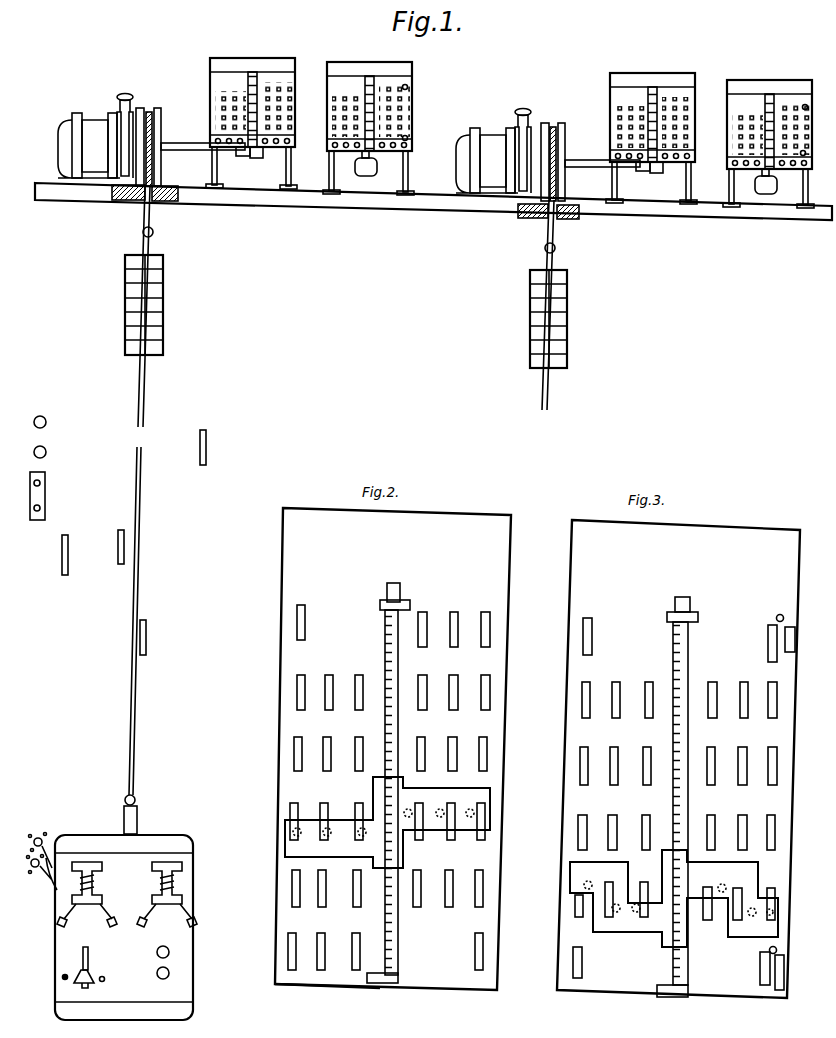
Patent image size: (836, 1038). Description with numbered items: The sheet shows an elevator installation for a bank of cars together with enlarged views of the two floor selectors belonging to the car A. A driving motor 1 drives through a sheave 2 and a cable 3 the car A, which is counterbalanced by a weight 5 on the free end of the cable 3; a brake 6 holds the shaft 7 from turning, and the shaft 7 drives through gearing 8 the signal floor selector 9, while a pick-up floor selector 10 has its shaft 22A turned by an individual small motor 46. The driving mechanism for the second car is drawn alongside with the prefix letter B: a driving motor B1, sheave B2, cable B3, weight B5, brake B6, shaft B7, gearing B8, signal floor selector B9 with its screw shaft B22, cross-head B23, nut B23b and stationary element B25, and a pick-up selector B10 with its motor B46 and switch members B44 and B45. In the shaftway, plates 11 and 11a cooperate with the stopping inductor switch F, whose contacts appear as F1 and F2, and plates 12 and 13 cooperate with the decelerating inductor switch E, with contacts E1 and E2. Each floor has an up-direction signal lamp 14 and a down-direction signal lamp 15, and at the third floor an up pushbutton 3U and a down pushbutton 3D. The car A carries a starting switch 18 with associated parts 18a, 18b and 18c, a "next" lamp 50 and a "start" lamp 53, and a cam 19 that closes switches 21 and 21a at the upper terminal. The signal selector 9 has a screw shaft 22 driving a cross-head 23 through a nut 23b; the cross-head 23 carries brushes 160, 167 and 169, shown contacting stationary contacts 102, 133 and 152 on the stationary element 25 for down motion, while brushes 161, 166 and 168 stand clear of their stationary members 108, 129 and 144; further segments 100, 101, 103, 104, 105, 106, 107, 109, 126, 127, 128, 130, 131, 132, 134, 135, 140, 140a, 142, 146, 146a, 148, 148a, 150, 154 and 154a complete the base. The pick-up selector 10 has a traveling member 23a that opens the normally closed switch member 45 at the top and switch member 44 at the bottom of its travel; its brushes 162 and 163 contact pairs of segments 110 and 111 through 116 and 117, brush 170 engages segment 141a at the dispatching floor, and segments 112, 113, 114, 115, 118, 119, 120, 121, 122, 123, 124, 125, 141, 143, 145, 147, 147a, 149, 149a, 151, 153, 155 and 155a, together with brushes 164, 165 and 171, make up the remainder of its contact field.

In FIG. 1, the driving motor 1 is at (97, 121).
In FIG. 1, the sheave 2 is at (162, 125).
In FIG. 1, the cable 3 is at (136, 380).
In FIG. 1, the weight 5 is at (165, 290).
In FIG. 1, the brake 6 is at (134, 100).
In FIG. 1, the shaft 7 is at (184, 152).
In FIG. 1, the gearing 8 is at (238, 152).
In FIG. 1, the signal floor selector 9 is at (268, 62).
In FIG. 2, the signal floor selector 9 is at (383, 1008).
In FIG. 1, the pick-up floor selector 10 is at (385, 67).
In FIG. 3, the pick-up floor selector 10 is at (605, 1015).
In FIG. 1, the plate 11 is at (121, 530).
In FIG. 1, the plate 11a is at (71, 547).
In FIG. 1, the plate 12 is at (147, 640).
In FIG. 1, the plate 13 is at (200, 439).
In FIG. 1, the up-direction signal lamp 14 is at (46, 420).
In FIG. 1, the down-direction signal lamp 15 is at (46, 452).
In FIG. 1, the up pushbutton 3U is at (45, 483).
In FIG. 1, the down pushbutton 3D is at (45, 508).
In FIG. 1, the starting switch 18 is at (114, 952).
In FIG. 1, the button contact 18a is at (62, 977).
In FIG. 1, the button base 18b is at (80, 987).
In FIG. 1, the button contact 18c is at (103, 982).
In FIG. 1, the cam 19 is at (52, 895).
In FIG. 1, the switch 21 is at (31, 863).
In FIG. 1, the switch 21a is at (37, 837).
In FIG. 1, the screw shaft 22 is at (249, 84).
In FIG. 2, the screw shaft 22 is at (385, 633).
In FIG. 3, the shaft 22A is at (673, 643).
In FIG. 1, the cross-head member 23 is at (294, 141).
In FIG. 2, the cross-head member 23 is at (491, 810).
In FIG. 1, the traveling member 23a is at (357, 152).
In FIG. 3, the traveling member 23a is at (570, 866).
In FIG. 1, the nut 23b is at (251, 158).
In FIG. 1, the stationary element 25 is at (294, 121).
In FIG. 2, the stationary element 25 is at (305, 978).
In FIG. 1, the switch member 44 is at (409, 139).
In FIG. 3, the switch member 44 is at (779, 992).
In FIG. 1, the switch member 45 is at (408, 88).
In FIG. 3, the switch member 45 is at (790, 627).
In FIG. 1, the motor 46 is at (378, 165).
In FIG. 1, the car A is at (55, 947).
In FIG. 1, the decelerating inductor switch E is at (156, 878).
In FIG. 1, the up switch contact E1 is at (144, 922).
In FIG. 1, the up switch contact E2 is at (180, 922).
In FIG. 1, the stopping inductor switch F is at (96, 884).
In FIG. 1, the down switch contact F1 is at (68, 921).
In FIG. 1, the down switch contact F2 is at (105, 921).
In FIG. 1, the "next" signal lamp 50 is at (157, 952).
In FIG. 1, the "start" signal lamp 53 is at (157, 973).
In FIG. 1, the driving motor B1 is at (492, 128).
In FIG. 1, the sheave B2 is at (565, 128).
In FIG. 1, the cable B3 is at (545, 384).
In FIG. 1, the weight B5 is at (567, 300).
In FIG. 1, the brake B6 is at (530, 112).
In FIG. 1, the shaft B7 is at (600, 168).
In FIG. 1, the gearing B8 is at (640, 170).
In FIG. 1, the signal floor selector B9 is at (662, 80).
In FIG. 1, the pick-up floor selector B10 is at (748, 85).
In FIG. 1, the screw shaft B22 is at (648, 97).
In FIG. 1, the cross-head member B23 is at (690, 152).
In FIG. 1, the nut B23b is at (655, 174).
In FIG. 1, the stationary element B25 is at (690, 120).
In FIG. 1, the switch member B44 is at (803, 165).
In FIG. 1, the switch member B45 is at (808, 106).
In FIG. 1, the motor B46 is at (760, 190).
In FIG. 2, the down cancel contact 100 is at (367, 669).
In FIG. 2, the down cancel contact 101 is at (367, 731).
In FIG. 2, the stationary contact 102 is at (363, 812).
In FIG. 2, the down cancel contact 103 is at (363, 895).
In FIG. 2, the down cancel contact 104 is at (361, 944).
In FIG. 2, the up cancel contact 105 is at (428, 621).
In FIG. 2, the up cancel contact 106 is at (426, 683).
In FIG. 2, the up cancel contact 107 is at (423, 745).
In FIG. 2, the stationary member 108 is at (423, 812).
In FIG. 2, the up cancel contact 109 is at (421, 881).
In FIG. 2, the up stop contact 126 is at (460, 621).
In FIG. 2, the up stop contact 127 is at (458, 683).
In FIG. 2, the up stop contact 128 is at (456, 745).
In FIG. 2, the stationary member 129 is at (456, 812).
In FIG. 2, the up stop contact 130 is at (453, 881).
In FIG. 2, the down stop contact 131 is at (337, 669).
In FIG. 2, the down stop contact 132 is at (335, 731).
In FIG. 2, the stationary contact 133 is at (331, 812).
In FIG. 2, the down stop contact 134 is at (330, 895).
In FIG. 2, the down stop contact 135 is at (328, 944).
In FIG. 2, the up BP contact 140 is at (490, 683).
In FIG. 2, the contact segment 140a is at (493, 621).
In FIG. 2, the up BP contact 142 is at (488, 745).
In FIG. 2, the stationary member 144 is at (488, 812).
In FIG. 2, the up BP contact 146 is at (486, 880).
In FIG. 2, the up BP contact 146a is at (477, 929).
In FIG. 2, the down BP contact 148 is at (309, 669).
In FIG. 2, the down BP contact 148a is at (310, 599).
In FIG. 2, the down BP contact 150 is at (306, 731).
In FIG. 2, the stationary contact 152 is at (296, 812).
In FIG. 2, the down BP contact 154 is at (294, 905).
In FIG. 2, the down BP contact 154a is at (293, 944).
In FIG. 2, the moving contact brush 160 is at (366, 841).
In FIG. 2, the moving contact member 161 is at (419, 833).
In FIG. 2, the moving contact member 166 is at (451, 833).
In FIG. 2, the moving contact brush 167 is at (333, 841).
In FIG. 2, the moving contact member 168 is at (482, 833).
In FIG. 2, the moving contact brush 169 is at (300, 841).
In FIG. 3, the segment 110 is at (619, 691).
In FIG. 3, the segment 111 is at (653, 691).
In FIG. 3, the down call contact 112 is at (619, 757).
In FIG. 3, the down call contact 113 is at (653, 757).
In FIG. 3, the down call contact 114 is at (618, 823).
In FIG. 3, the down call contact 115 is at (651, 823).
In FIG. 3, the segment 116 is at (616, 889).
In FIG. 3, the segment 117 is at (650, 889).
In FIG. 3, the up call contact 118 is at (716, 691).
In FIG. 3, the up call contact 119 is at (748, 691).
In FIG. 3, the up call contact 120 is at (714, 757).
In FIG. 3, the up call contact 121 is at (747, 757).
In FIG. 3, the up call contact 122 is at (713, 823).
In FIG. 3, the up call contact 123 is at (746, 823).
In FIG. 3, the up call contact 124 is at (701, 893).
In FIG. 3, the carriage brush 125 is at (742, 921).
In FIG. 3, the up BP contact 141 is at (779, 691).
In FIG. 3, the contact segment 141a is at (768, 644).
In FIG. 3, the up BP contact 143 is at (778, 757).
In FIG. 3, the up BP contact 145 is at (777, 823).
In FIG. 3, the up BP contact 147 is at (777, 894).
In FIG. 3, the up BP contact 147a is at (760, 971).
In FIG. 3, the down BP contact 149 is at (586, 691).
In FIG. 3, the down BP contact 149a is at (595, 613).
In FIG. 3, the down BP contact 151 is at (583, 757).
In FIG. 3, the down BP contact 153 is at (583, 823).
In FIG. 3, the down BP contact 155 is at (575, 913).
In FIG. 3, the down BP contact 155a is at (583, 953).
In FIG. 3, the pick-up selector brush 162 is at (611, 918).
In FIG. 3, the pick-up selector brush 163 is at (645, 918).
In FIG. 3, the carriage brush 164 is at (725, 876).
In FIG. 3, the up call contact 165 is at (747, 894).
In FIG. 3, the brush 170 is at (768, 921).
In FIG. 3, the carriage brush 171 is at (587, 875).